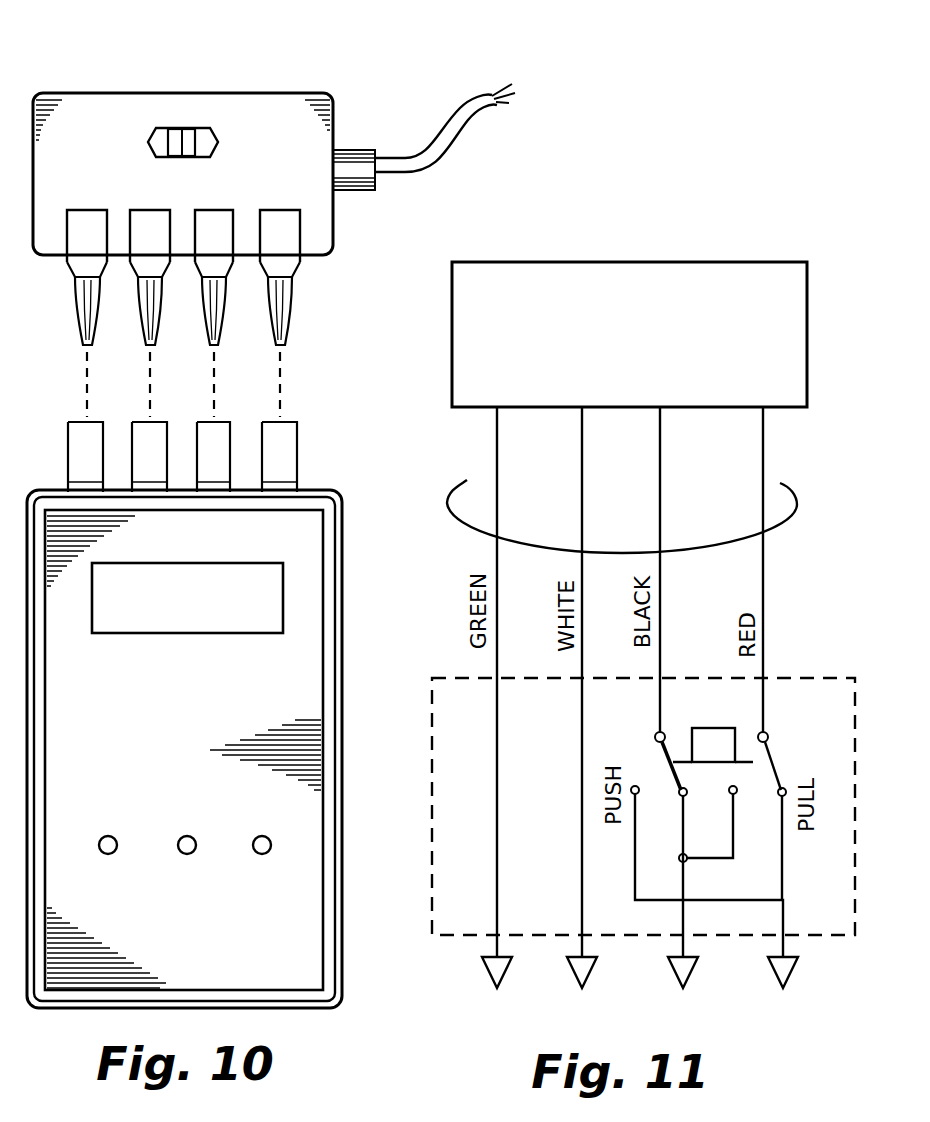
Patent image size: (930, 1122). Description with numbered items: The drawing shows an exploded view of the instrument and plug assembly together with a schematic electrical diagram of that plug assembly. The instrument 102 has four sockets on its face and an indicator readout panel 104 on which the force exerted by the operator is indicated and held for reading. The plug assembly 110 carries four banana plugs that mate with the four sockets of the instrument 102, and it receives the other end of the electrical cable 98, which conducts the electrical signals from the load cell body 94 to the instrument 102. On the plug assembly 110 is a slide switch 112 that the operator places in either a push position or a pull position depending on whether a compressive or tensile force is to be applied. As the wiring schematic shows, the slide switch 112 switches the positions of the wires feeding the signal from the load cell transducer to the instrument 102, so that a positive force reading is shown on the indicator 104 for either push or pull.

In FIG. 11, the load cell body 94 is at (645, 382).
In FIG. 10, the electrical cable 98 is at (441, 128).
In FIG. 11, the electrical cable 98 is at (456, 486).
In FIG. 10, the instrument 102 is at (342, 697).
In FIG. 10, the indicator readout panel 104 is at (202, 613).
In FIG. 10, the plug assembly 110 is at (107, 93).
In FIG. 11, the plug assembly 110 is at (432, 870).
In FIG. 10, the slide switch 112 is at (215, 93).
In FIG. 11, the slide switch 112 is at (720, 728).